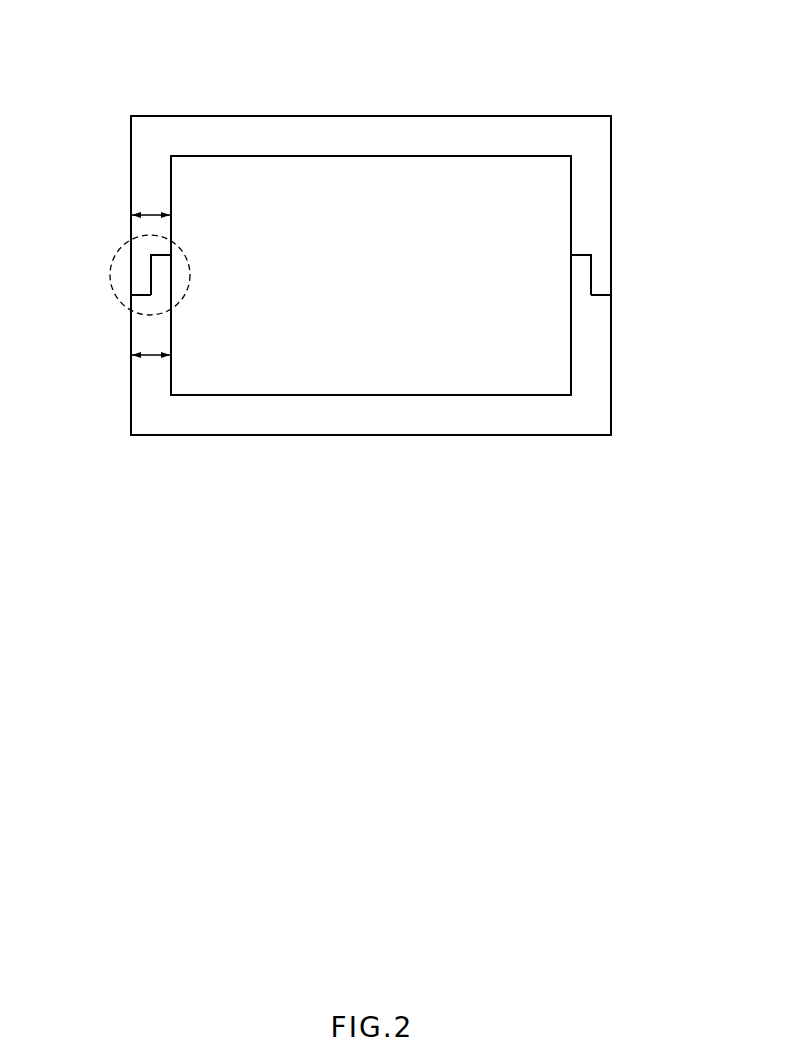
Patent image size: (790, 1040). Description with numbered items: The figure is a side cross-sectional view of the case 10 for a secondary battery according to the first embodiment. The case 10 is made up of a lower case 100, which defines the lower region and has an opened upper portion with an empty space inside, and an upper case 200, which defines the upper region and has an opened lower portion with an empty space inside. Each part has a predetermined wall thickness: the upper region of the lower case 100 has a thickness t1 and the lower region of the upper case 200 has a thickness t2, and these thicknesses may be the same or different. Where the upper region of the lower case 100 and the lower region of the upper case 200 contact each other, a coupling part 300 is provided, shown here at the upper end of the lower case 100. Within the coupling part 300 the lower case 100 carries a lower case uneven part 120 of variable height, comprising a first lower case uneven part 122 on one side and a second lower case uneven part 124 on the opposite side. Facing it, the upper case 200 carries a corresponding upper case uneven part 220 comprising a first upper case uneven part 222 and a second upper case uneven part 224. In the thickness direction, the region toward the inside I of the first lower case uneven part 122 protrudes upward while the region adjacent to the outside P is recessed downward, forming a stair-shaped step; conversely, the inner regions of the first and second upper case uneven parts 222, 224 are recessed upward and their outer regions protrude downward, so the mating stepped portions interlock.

The case for the secondary battery 10 is at (500, 78).
The lower case 100 is at (371, 414).
The upper case 200 is at (370, 136).
The coupling part 300 is at (122, 247).
The lower case uneven part 120 is at (380, 418).
The first lower case uneven part 122 is at (171, 275).
The second lower case uneven part 124 is at (570, 275).
The upper case uneven part 220 is at (371, 461).
The first upper case uneven part 222 is at (131, 275).
The second upper case uneven part 224 is at (611, 275).
The thickness of the upper region of the lower case t1 is at (151, 342).
The thickness of the lower region of the upper case t2 is at (151, 202).
The outside P is at (131, 373).
The inside I is at (171, 373).